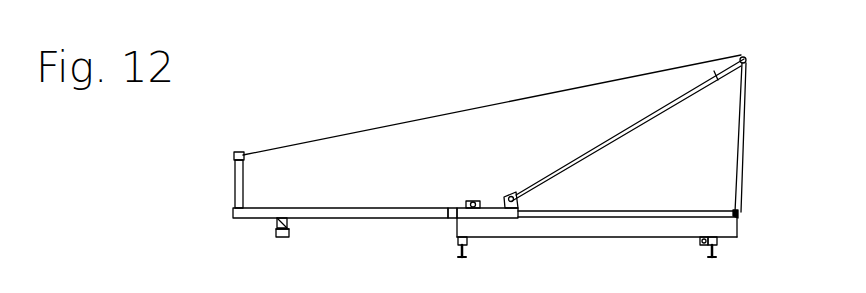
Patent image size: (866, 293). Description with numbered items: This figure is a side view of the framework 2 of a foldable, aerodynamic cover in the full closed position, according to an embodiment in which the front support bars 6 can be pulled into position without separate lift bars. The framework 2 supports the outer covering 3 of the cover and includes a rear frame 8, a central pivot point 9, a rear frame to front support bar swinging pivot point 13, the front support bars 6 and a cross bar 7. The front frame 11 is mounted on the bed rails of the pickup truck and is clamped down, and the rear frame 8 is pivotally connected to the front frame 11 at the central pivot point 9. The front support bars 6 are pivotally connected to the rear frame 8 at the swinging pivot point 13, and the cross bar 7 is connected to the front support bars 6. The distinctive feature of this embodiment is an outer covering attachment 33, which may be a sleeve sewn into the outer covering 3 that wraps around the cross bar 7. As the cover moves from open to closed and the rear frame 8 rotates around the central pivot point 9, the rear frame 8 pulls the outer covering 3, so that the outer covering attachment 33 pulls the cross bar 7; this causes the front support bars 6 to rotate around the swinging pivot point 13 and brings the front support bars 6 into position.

The framework 2 is at (738, 55).
The outer covering 3 is at (383, 126).
The front support bar 6 is at (600, 142).
The cross bar 7 is at (738, 78).
The rear frame 8 is at (402, 208).
The central pivot point 9 is at (470, 200).
The front frame 11 is at (563, 230).
The rear frame to front support bar swinging pivot point 13 is at (510, 194).
The outer covering attachment 33 is at (748, 62).